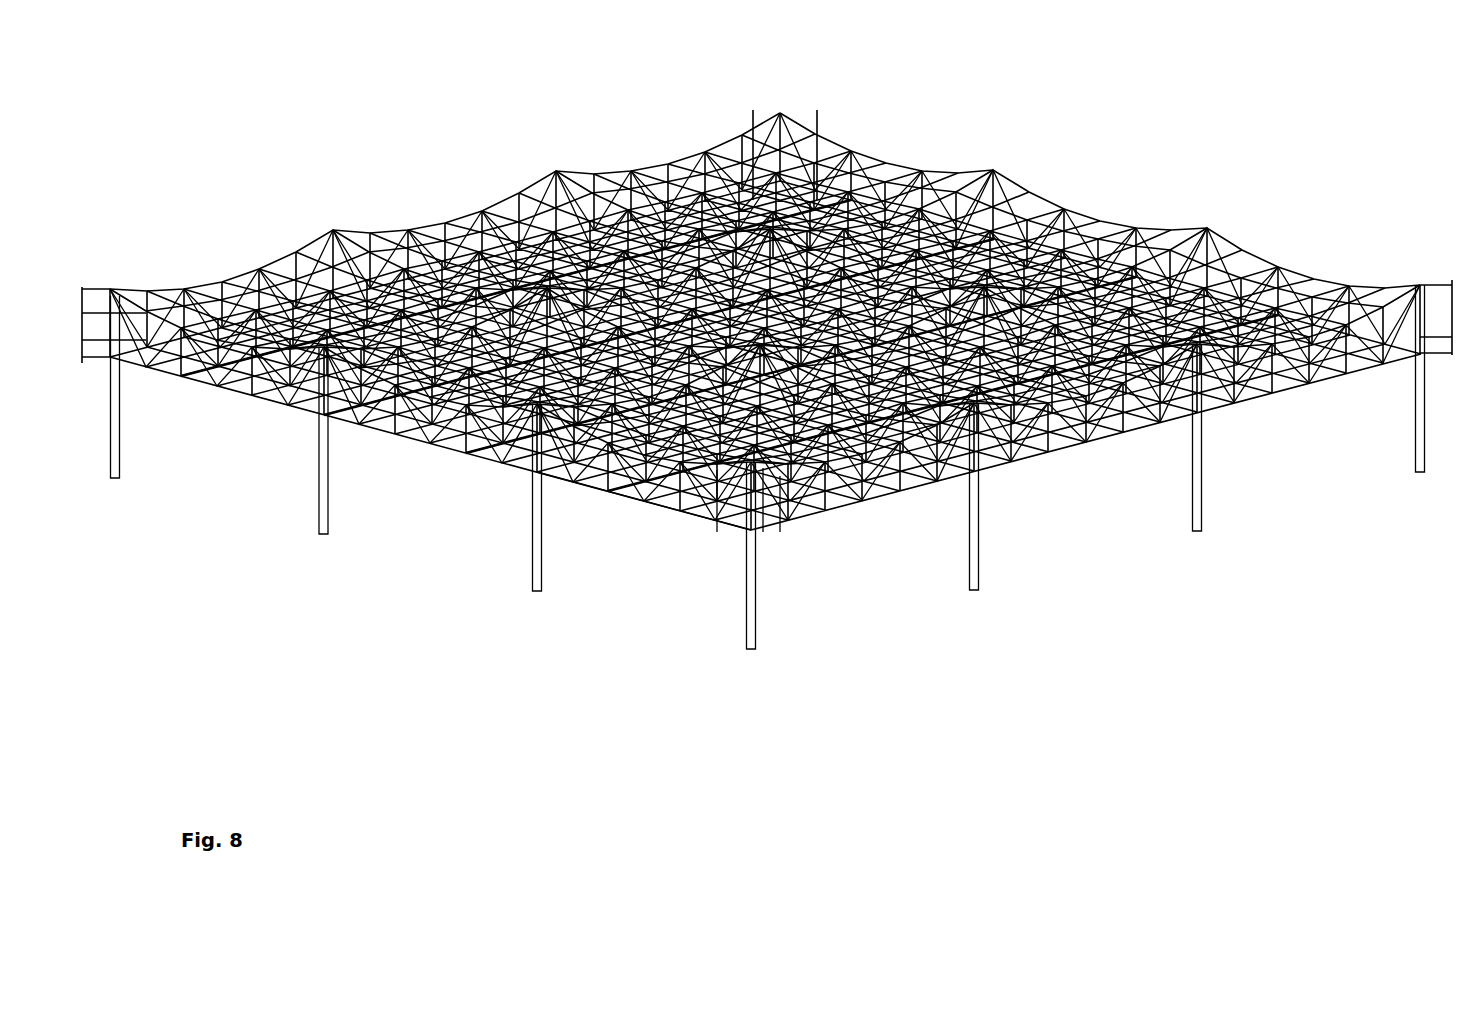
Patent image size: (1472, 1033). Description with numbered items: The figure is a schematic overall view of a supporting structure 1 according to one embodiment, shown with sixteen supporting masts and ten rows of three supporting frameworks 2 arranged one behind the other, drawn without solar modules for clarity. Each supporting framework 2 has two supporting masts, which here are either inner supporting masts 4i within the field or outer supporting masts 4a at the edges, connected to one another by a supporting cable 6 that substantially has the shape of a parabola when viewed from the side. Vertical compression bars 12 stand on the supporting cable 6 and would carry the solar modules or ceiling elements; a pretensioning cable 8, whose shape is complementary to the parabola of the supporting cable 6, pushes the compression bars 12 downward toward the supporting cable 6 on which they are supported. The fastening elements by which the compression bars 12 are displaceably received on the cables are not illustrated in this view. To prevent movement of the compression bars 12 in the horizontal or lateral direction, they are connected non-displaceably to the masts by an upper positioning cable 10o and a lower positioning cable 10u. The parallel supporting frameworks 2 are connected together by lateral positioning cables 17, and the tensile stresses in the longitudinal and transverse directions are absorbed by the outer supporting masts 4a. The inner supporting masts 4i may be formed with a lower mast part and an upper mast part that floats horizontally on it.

The supporting structure 1 is at (452, 162).
The upper positioning cable 10o is at (176, 287).
The lower positioning cable 10u is at (143, 338).
The inner supporting mast 4i is at (758, 443).
The outer supporting mast 4a is at (530, 553).
The supporting framework 2 is at (836, 532).
The compression bar 12 is at (870, 478).
The supporting cable 6 is at (912, 470).
The pretensioning cable 8 is at (800, 488).
The lateral positioning cables 17 is at (600, 462).